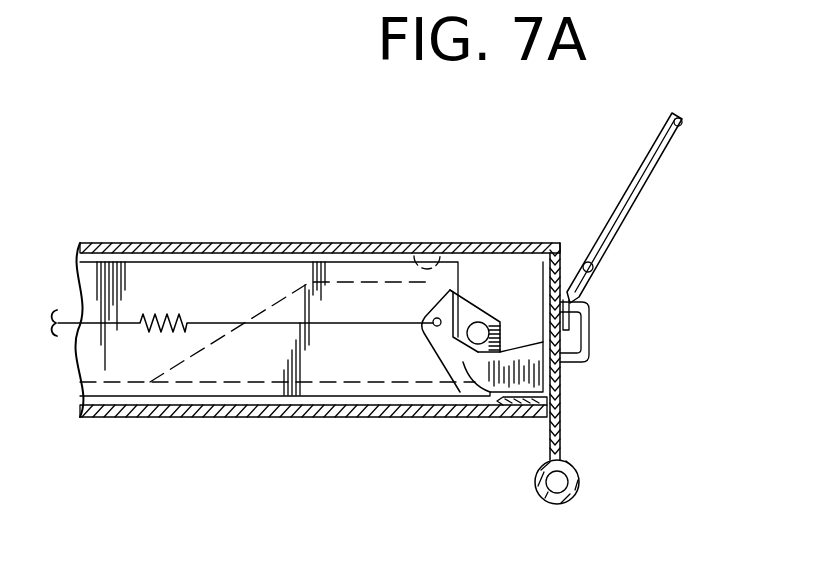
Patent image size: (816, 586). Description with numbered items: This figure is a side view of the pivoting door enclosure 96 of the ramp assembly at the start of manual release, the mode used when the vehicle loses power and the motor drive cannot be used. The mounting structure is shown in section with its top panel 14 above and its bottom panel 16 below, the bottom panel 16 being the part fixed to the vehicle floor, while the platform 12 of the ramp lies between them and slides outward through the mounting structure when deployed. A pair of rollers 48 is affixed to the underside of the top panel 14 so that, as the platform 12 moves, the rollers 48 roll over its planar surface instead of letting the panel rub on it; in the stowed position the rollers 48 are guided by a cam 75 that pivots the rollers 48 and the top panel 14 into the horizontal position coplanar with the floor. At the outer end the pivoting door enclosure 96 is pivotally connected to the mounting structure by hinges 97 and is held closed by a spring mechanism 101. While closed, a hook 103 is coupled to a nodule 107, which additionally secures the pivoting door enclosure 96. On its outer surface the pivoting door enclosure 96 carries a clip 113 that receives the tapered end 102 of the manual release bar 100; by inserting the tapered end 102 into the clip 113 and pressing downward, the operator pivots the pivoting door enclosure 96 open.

The platform 12 is at (322, 398).
The top panel 14 is at (270, 247).
The bottom panel 16 is at (192, 413).
The rollers 48 is at (427, 253).
The cam 75 is at (387, 302).
The pivoting door enclosure 96 is at (561, 426).
The hinges 97 is at (571, 496).
The manual release bar 100 is at (641, 181).
The spring mechanism 101 is at (163, 308).
The tapered end 102 is at (570, 298).
The hook 103 is at (458, 378).
The nodule 107 is at (478, 322).
The clip 113 is at (589, 334).